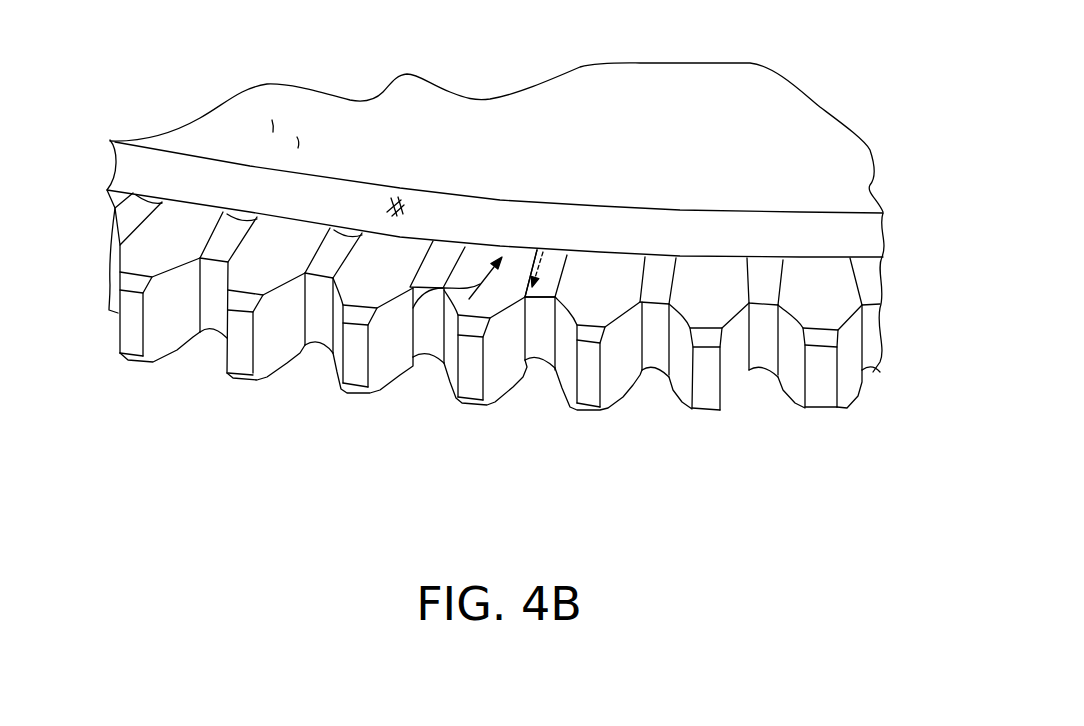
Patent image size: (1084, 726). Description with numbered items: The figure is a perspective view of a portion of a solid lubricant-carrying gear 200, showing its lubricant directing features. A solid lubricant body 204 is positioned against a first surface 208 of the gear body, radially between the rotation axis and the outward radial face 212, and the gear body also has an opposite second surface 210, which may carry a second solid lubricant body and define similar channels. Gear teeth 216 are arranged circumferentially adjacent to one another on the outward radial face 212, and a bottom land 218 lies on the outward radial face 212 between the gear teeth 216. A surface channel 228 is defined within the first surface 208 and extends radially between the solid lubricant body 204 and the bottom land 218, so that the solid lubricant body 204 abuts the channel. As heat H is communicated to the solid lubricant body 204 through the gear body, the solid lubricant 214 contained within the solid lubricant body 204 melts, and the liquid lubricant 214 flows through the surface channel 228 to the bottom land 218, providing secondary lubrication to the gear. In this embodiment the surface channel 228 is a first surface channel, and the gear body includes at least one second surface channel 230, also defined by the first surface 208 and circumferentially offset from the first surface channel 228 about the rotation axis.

The solid lubricant-carrying gear 200 is at (495, 268).
The solid lubricant body 204 is at (615, 220).
The first surface 208 is at (703, 192).
The second surface 210 is at (290, 130).
The outward radial face 212 is at (771, 391).
The solid lubricant 214 is at (393, 197).
The gear teeth 216 is at (470, 380).
The bottom land 218 is at (538, 337).
The surface channel 228 is at (542, 288).
The second surface channel 230 is at (653, 278).
The heat H is at (442, 346).